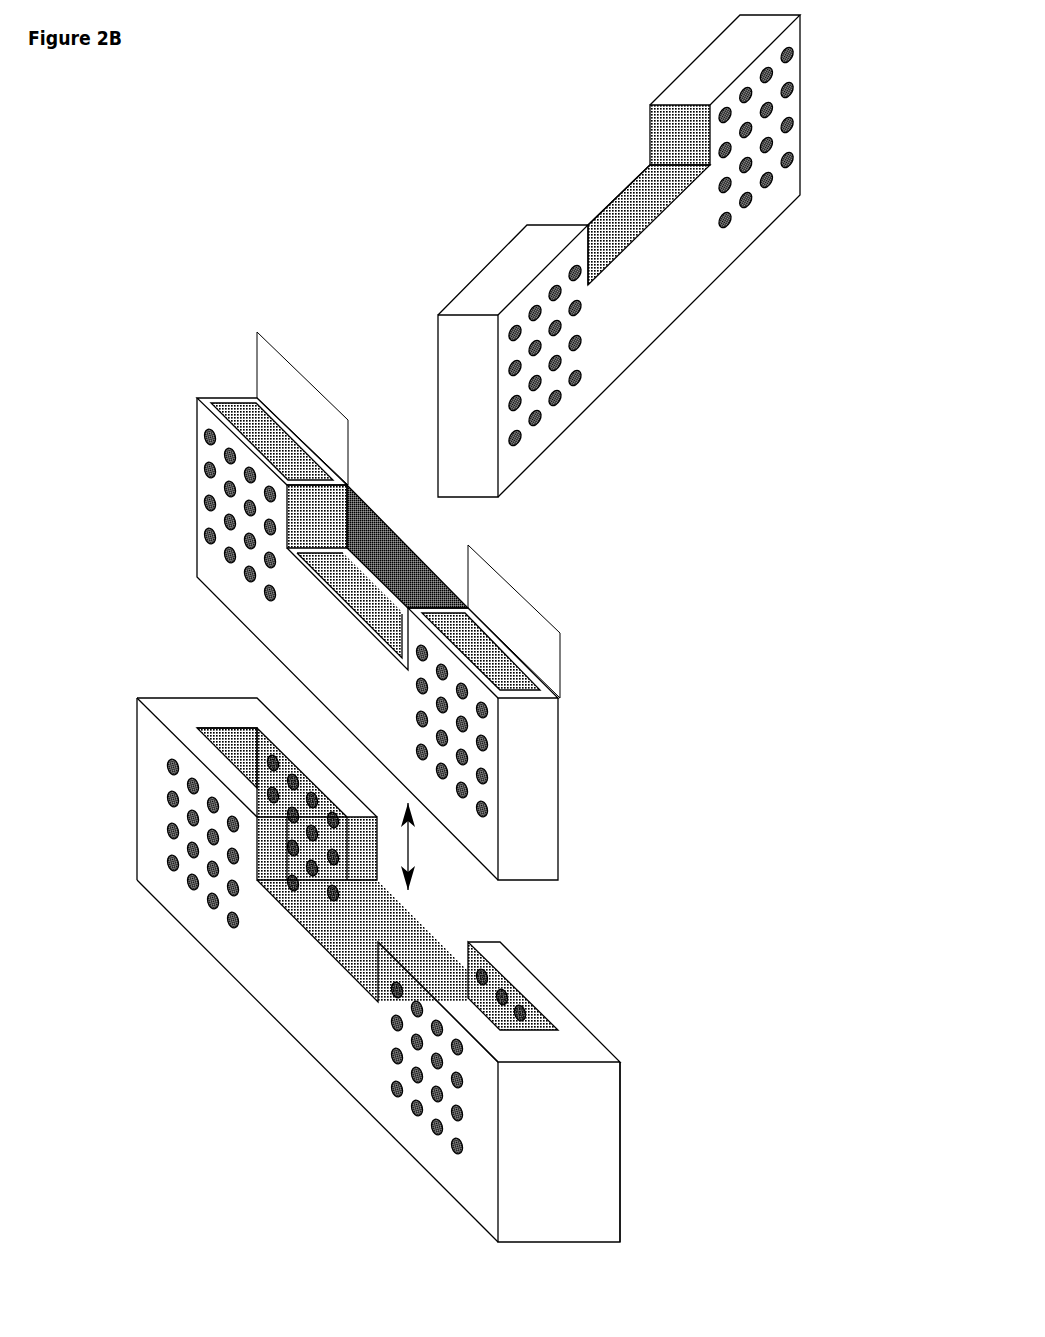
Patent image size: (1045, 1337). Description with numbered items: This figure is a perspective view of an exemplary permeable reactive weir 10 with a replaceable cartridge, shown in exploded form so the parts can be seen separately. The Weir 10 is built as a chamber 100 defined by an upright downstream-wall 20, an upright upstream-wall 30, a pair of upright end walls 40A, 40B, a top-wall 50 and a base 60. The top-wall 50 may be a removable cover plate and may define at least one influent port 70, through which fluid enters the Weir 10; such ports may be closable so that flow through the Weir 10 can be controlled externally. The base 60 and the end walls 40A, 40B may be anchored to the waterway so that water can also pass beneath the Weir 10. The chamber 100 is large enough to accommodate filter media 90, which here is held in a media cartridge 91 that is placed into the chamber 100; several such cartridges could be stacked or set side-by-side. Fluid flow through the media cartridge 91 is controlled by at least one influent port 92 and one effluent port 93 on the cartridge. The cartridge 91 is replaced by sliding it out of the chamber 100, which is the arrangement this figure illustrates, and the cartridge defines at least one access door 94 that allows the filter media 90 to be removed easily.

The permeable reactive weir 10 is at (375, 945).
The downstream-wall 20 is at (312, 1012).
The upstream-wall 30 is at (623, 1113).
The end wall 40A is at (541, 1092).
The end wall 40B is at (217, 821).
The top-wall 50 is at (576, 1052).
The base 60 is at (417, 1168).
The influent port 70 is at (183, 890).
The filter media 90 is at (346, 606).
The media cartridge 91 is at (619, 408).
The influent port 92 is at (221, 558).
The effluent port 93 is at (562, 397).
The access door 94 is at (345, 462).
The chamber 100 is at (248, 752).